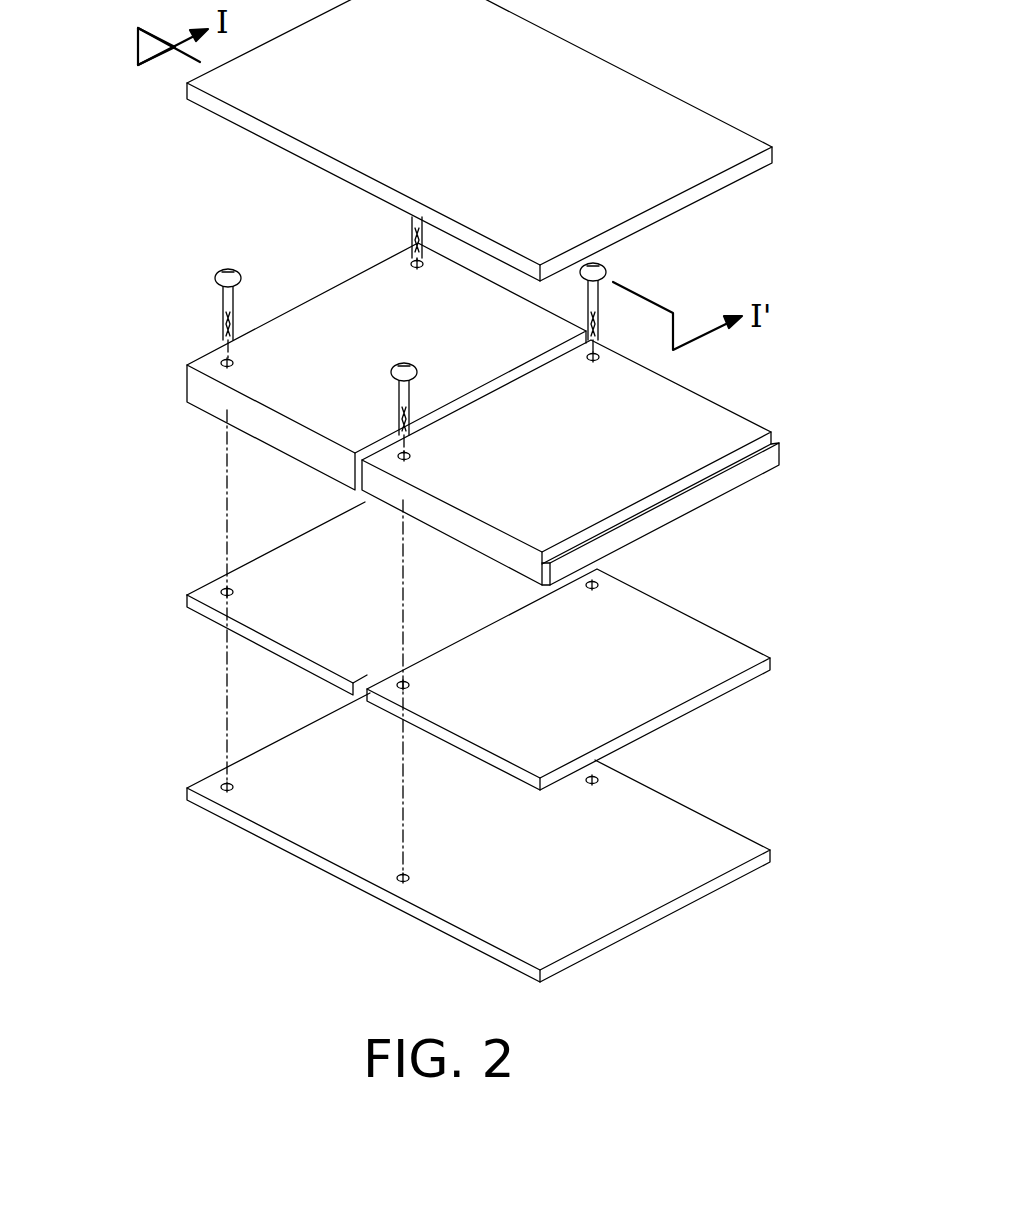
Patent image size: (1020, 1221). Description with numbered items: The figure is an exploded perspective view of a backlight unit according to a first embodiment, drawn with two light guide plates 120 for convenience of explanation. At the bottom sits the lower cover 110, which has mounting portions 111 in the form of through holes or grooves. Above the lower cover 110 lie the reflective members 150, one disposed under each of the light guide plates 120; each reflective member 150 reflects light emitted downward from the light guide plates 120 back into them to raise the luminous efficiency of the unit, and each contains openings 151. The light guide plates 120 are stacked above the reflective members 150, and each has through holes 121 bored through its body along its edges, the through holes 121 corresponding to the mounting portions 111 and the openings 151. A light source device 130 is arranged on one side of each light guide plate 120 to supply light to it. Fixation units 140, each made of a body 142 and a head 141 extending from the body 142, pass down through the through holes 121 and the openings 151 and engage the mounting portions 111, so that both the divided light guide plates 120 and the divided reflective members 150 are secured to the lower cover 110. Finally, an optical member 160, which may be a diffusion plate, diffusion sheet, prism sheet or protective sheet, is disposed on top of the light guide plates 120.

The lower cover 110 is at (518, 837).
The mounting portion 111 is at (600, 768).
The light guide plate 120 is at (515, 401).
The through hole 121 is at (412, 258).
The light source device 130 is at (727, 488).
The fixation unit 140 is at (317, 326).
The head 141 is at (216, 278).
The body 142 is at (222, 313).
The reflective member 150 is at (520, 646).
The opening 151 is at (597, 575).
The optical member 160 is at (693, 117).